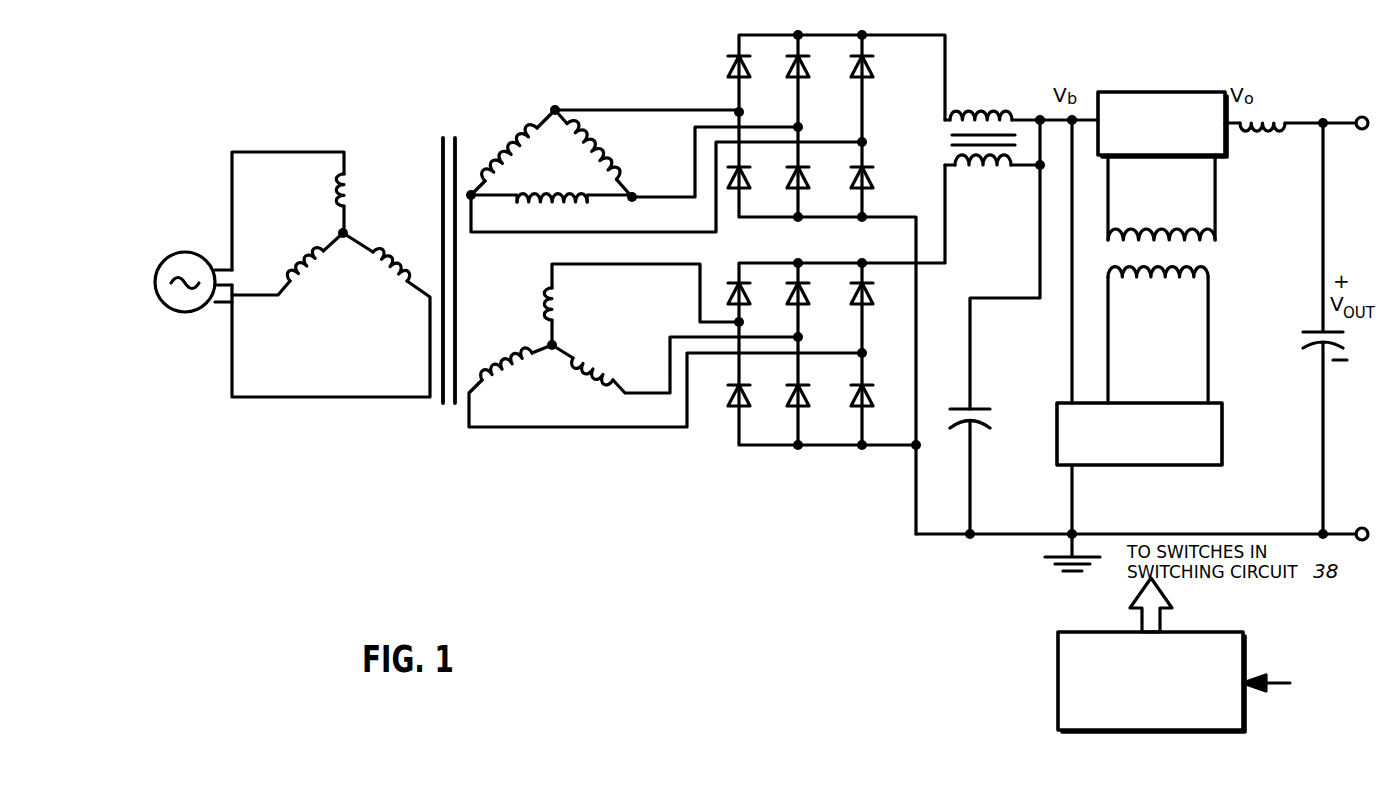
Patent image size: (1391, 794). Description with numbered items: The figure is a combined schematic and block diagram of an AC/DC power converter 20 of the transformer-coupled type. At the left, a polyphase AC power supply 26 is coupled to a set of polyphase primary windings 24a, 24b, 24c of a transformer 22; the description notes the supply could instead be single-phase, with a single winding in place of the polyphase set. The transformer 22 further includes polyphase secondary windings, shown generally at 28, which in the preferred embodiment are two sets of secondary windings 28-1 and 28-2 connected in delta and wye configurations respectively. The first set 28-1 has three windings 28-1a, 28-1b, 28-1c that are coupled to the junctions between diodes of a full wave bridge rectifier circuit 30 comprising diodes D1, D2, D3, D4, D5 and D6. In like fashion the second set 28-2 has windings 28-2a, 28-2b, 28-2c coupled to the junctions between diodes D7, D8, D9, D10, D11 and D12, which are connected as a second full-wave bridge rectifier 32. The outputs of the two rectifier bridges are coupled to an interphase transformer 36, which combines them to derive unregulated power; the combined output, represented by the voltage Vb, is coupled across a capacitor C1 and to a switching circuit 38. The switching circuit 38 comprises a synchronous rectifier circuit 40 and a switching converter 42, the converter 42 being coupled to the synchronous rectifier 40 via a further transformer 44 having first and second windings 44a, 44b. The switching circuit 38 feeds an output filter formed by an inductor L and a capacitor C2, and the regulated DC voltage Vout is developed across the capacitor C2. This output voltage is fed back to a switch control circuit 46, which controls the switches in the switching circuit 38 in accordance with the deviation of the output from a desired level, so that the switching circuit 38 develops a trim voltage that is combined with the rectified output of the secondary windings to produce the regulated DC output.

The AC/DC power converter 20 is at (601, 449).
The transformer 22 is at (455, 438).
The transformer primary winding 24a is at (336, 189).
The transformer primary winding 24b is at (304, 262).
The transformer primary winding 24c is at (394, 281).
The polyphase AC power supply 26 is at (202, 254).
The polyphase secondary windings 28 is at (514, 278).
The first set of secondary windings 28-1 is at (518, 113).
The secondary winding 28-1a is at (505, 147).
The secondary winding 28-1b is at (593, 150).
The secondary winding 28-1c is at (561, 208).
The second set of secondary windings 28-2 is at (557, 361).
The secondary winding 28-2a is at (558, 318).
The secondary winding 28-2b is at (580, 358).
The secondary winding 28-2c is at (527, 328).
The rectifier circuit 30 is at (817, 282).
The second rectifier bridge 32 is at (814, 313).
The interphase transformer 36 is at (991, 173).
The switching circuit 38 is at (1167, 313).
The synchronous rectifier circuit 40 is at (1222, 151).
The switching converter 42 is at (1156, 466).
The further transformer 44 is at (1147, 279).
The first winding 44a is at (1139, 259).
The second winding 44b is at (1177, 232).
The switch control circuit 46 is at (1058, 681).
The capacitor C1 is at (988, 406).
The capacitor C2 is at (1310, 333).
The inductor L is at (1263, 118).
The diode D1 is at (733, 71).
The diode D2 is at (797, 80).
The diode D3 is at (859, 80).
The diode D4 is at (743, 189).
The diode D5 is at (802, 189).
The diode D6 is at (866, 189).
The diode D7 is at (742, 306).
The diode D8 is at (802, 306).
The diode D9 is at (866, 306).
The diode D10 is at (733, 408).
The diode D11 is at (790, 406).
The diode D12 is at (856, 406).